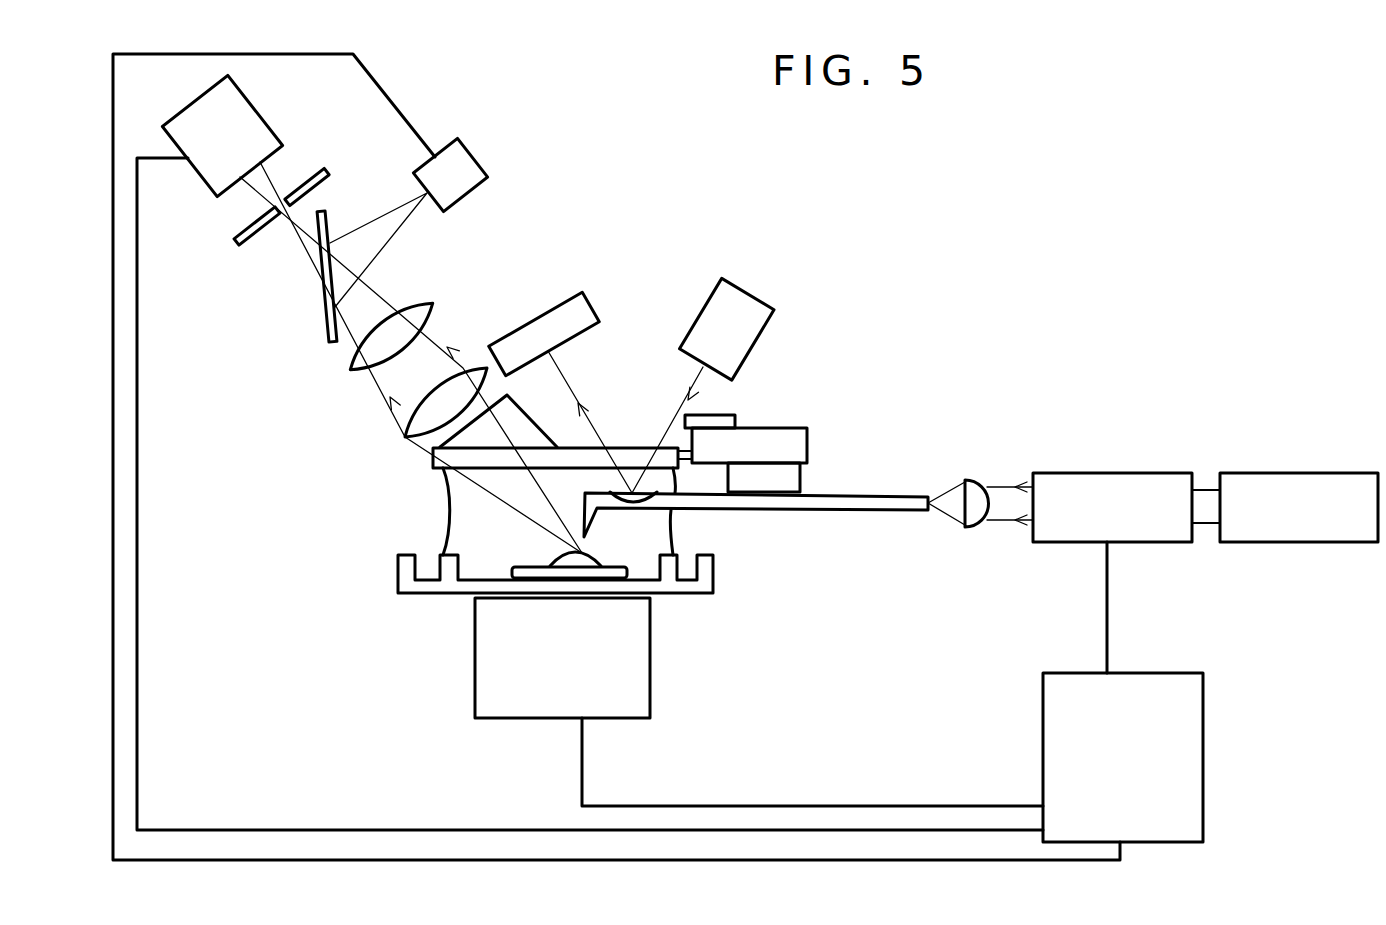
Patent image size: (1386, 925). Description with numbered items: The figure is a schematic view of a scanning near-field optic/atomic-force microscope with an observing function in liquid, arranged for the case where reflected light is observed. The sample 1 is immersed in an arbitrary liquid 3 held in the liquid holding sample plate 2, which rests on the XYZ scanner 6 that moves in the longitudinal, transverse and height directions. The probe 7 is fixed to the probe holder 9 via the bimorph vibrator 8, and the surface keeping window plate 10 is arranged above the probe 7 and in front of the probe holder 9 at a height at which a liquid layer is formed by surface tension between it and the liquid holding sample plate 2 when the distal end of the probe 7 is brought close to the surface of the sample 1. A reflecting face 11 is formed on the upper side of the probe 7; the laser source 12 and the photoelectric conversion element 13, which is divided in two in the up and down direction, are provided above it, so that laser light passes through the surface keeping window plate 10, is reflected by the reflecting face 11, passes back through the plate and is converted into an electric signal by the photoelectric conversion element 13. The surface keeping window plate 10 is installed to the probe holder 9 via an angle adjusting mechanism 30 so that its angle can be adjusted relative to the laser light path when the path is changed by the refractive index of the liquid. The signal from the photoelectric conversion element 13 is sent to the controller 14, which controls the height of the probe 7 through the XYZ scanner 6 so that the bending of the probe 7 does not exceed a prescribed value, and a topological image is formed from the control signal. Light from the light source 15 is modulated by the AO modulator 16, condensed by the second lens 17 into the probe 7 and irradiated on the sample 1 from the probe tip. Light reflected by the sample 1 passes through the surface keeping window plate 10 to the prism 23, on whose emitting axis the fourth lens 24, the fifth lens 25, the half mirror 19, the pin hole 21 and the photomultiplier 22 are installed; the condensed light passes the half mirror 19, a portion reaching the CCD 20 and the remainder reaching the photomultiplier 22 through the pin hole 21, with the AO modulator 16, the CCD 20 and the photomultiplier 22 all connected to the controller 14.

The sample 1 is at (582, 550).
The liquid holding sample plate 2 is at (398, 583).
The liquid 3 is at (458, 545).
The XYZ scanner 6 is at (490, 682).
The probe 7 is at (867, 505).
The bimorph vibrator 8 is at (802, 482).
The probe holder 9 is at (752, 437).
The surface keeping window plate 10 is at (433, 455).
The reflecting face 11 is at (633, 492).
The laser source 12 is at (753, 320).
The photoelectric conversion element 13 is at (548, 333).
The controller 14 is at (1155, 740).
The light source 15 is at (1287, 483).
The AO modulator 16 is at (1120, 473).
The second lens 17 is at (973, 483).
The half mirror 19 is at (323, 317).
The CCD 20 is at (483, 168).
The pin hole 21 is at (243, 222).
The photomultiplier 22 is at (252, 128).
The prism 23 is at (512, 423).
The fourth lens 24 is at (400, 433).
The fifth lens 25 is at (356, 358).
The angle adjusting mechanism 30 is at (727, 423).